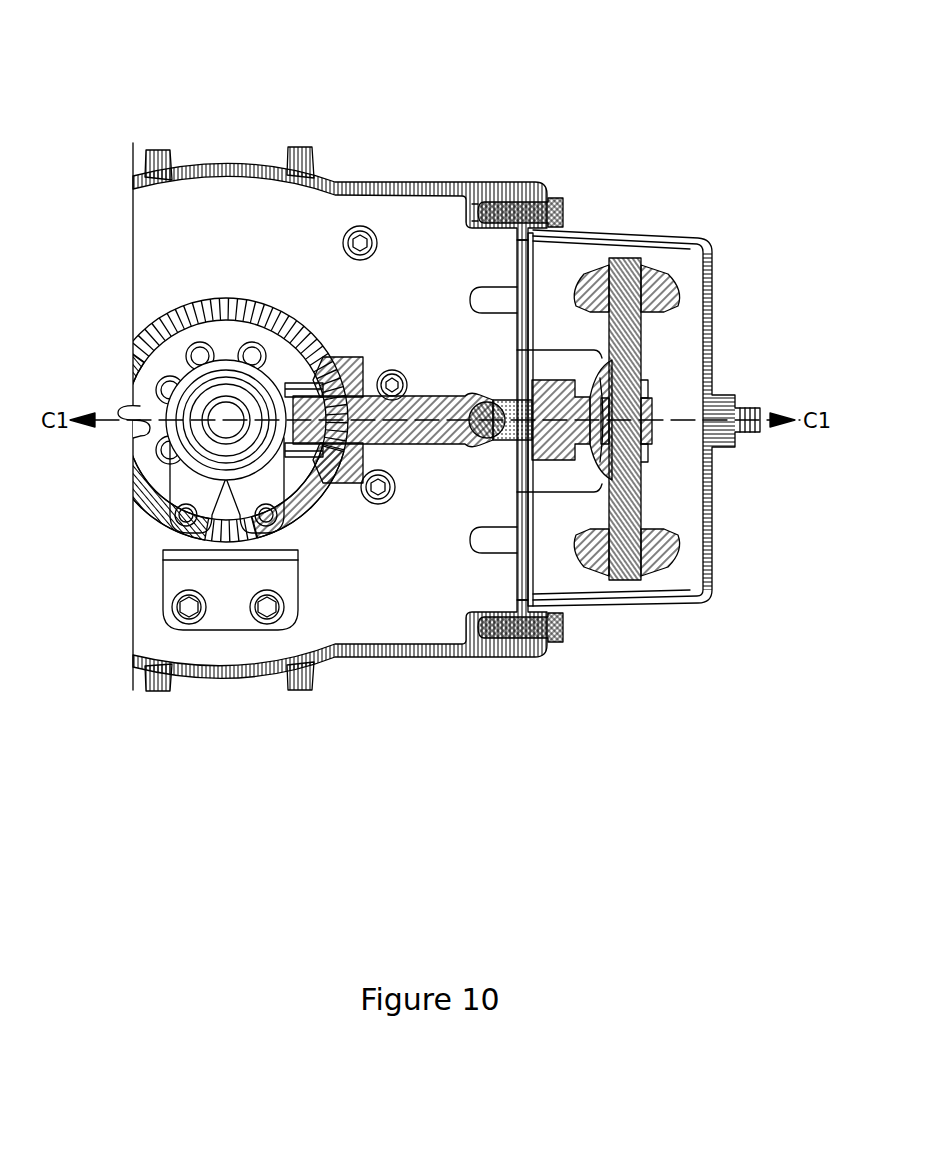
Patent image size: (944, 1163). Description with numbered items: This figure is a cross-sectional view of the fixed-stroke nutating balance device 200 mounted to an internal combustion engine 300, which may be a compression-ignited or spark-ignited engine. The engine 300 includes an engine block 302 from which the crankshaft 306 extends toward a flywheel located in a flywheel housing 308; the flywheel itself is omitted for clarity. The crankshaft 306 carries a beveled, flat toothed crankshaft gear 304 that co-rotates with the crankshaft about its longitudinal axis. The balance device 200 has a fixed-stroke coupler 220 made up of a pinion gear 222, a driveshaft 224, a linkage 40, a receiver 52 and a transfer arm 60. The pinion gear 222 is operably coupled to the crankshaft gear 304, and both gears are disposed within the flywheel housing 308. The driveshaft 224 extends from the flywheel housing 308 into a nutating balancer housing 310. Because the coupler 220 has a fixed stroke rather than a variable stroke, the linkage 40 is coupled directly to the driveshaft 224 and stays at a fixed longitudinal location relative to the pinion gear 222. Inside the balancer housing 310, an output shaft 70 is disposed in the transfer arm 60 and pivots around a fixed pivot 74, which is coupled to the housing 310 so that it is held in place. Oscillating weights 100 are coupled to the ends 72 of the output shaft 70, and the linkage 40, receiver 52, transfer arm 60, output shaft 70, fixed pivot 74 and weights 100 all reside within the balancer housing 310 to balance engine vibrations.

The internal combustion engine 300 is at (247, 70).
The engine block 302 is at (185, 691).
The crankshaft gear 304 is at (137, 328).
The crankshaft 306 is at (224, 420).
The flywheel housing 308 is at (245, 673).
The fixed-stroke coupler 220 is at (437, 318).
The pinion gear 222 is at (358, 360).
The driveshaft 224 is at (410, 432).
The linkage 40 is at (482, 410).
The receiver 52 is at (553, 380).
The nutating balance device 200 is at (668, 405).
The ends of the output shaft 72 is at (632, 270).
The output shaft 70 is at (636, 325).
The transfer arm 60 is at (618, 372).
The fixed pivot 74 is at (652, 400).
The oscillating weight 100 is at (646, 284).
The nutating balancer housing 310 is at (712, 525).